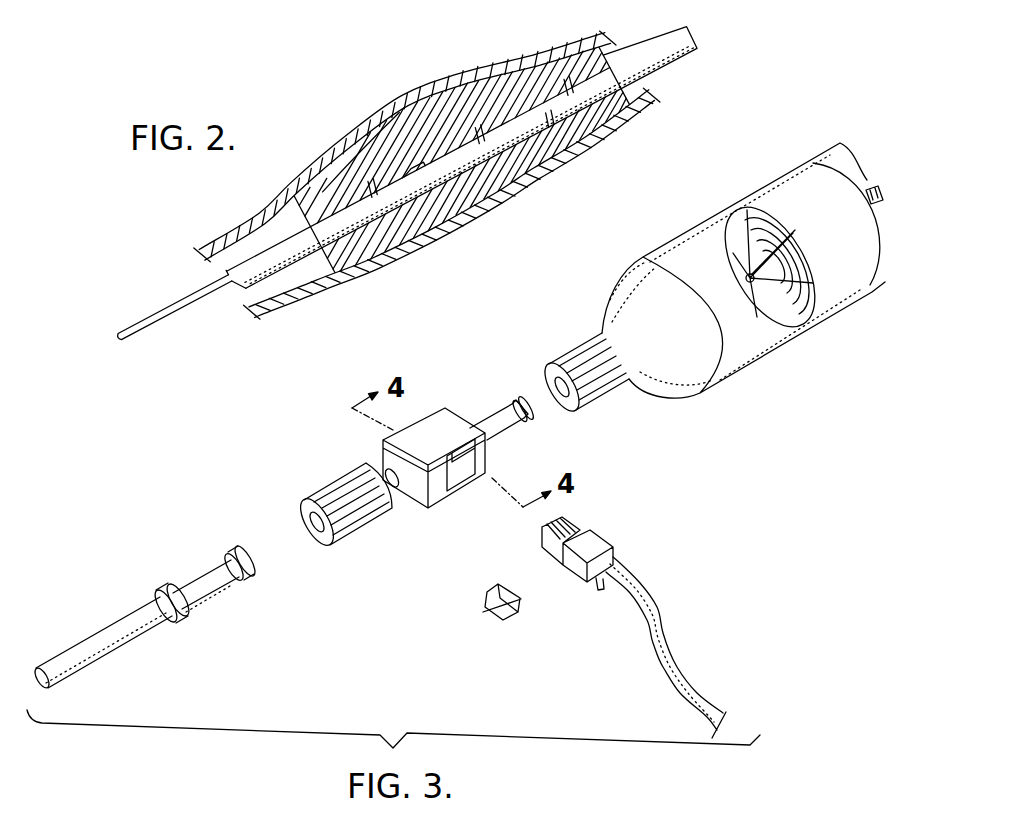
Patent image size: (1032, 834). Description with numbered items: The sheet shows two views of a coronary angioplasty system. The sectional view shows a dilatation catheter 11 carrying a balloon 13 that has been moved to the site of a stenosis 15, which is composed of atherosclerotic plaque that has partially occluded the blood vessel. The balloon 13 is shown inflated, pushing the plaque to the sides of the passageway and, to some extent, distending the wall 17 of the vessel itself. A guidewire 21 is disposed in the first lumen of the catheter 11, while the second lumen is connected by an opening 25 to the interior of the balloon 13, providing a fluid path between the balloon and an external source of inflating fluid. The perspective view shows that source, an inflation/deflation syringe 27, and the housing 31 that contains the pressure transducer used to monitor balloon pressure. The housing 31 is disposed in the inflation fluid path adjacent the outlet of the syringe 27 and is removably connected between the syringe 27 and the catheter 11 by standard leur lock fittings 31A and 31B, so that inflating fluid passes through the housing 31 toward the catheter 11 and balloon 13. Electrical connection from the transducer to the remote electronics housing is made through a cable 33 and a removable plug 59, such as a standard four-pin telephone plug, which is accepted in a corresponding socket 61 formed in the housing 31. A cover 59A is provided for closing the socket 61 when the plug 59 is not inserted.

In FIG. 2, the dilatation catheter 11 is at (262, 260).
In FIG. 3, the dilatation catheter 11 is at (104, 628).
In FIG. 2, the balloon 13 is at (298, 275).
In FIG. 2, the stenosis 15 is at (447, 230).
In FIG. 2, the wall 17 is at (284, 314).
In FIG. 2, the guidewire 21 is at (165, 325).
In FIG. 2, the opening 25 is at (416, 170).
In FIG. 3, the inflation/deflation syringe 27 is at (743, 372).
In FIG. 3, the housing 31 is at (430, 410).
In FIG. 3, the leur lock fitting 31A is at (507, 400).
In FIG. 3, the leur lock fitting 31B is at (345, 475).
In FIG. 3, the cable 33 is at (659, 598).
In FIG. 3, the removable plug 59 is at (593, 530).
In FIG. 3, the cover 59A is at (512, 562).
In FIG. 3, the socket 61 is at (472, 496).